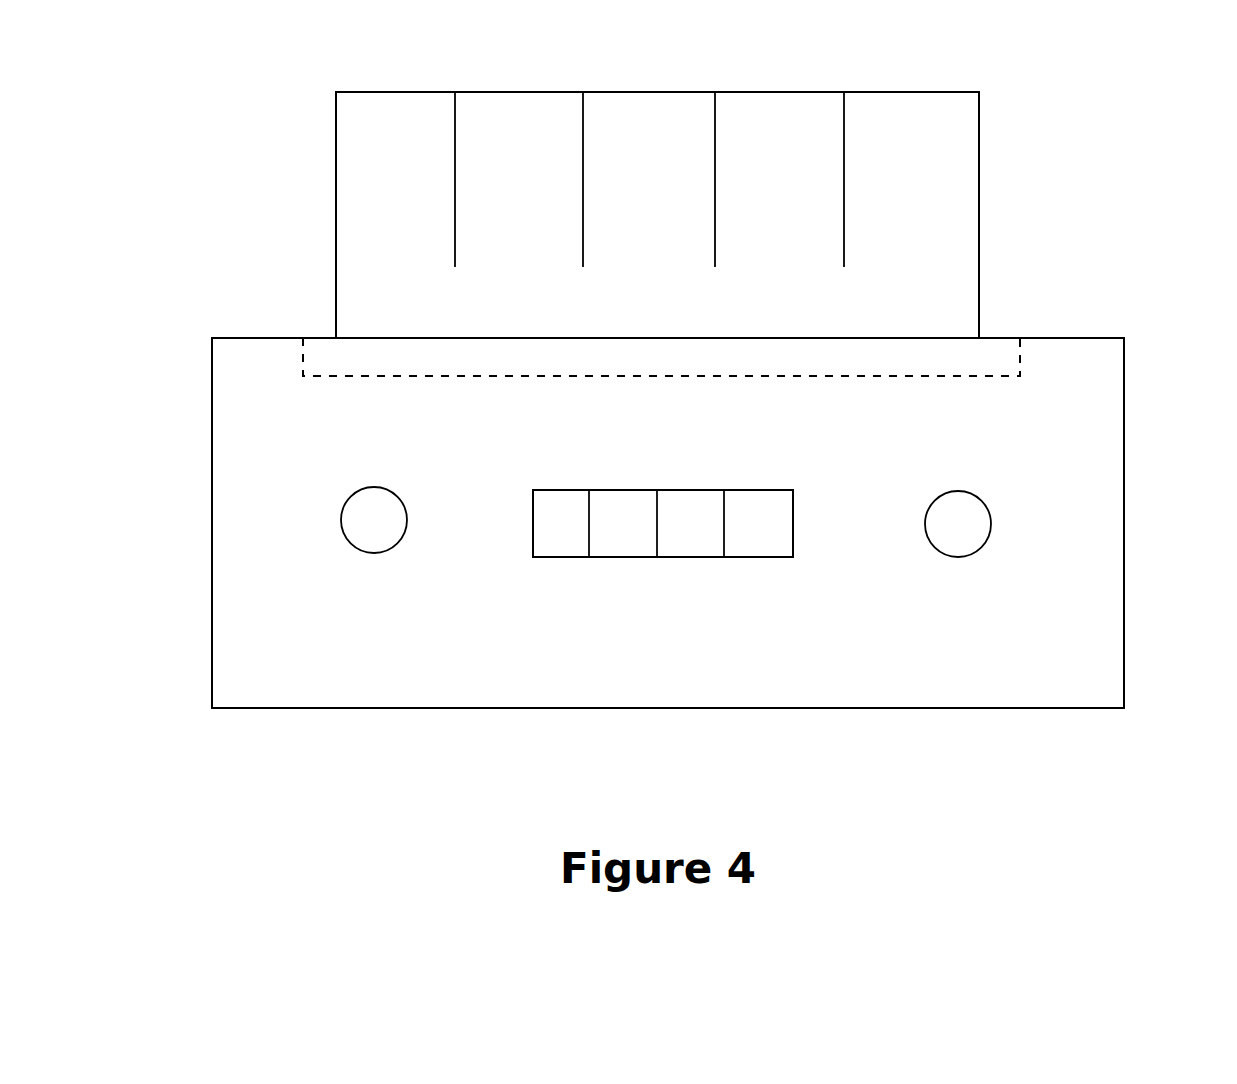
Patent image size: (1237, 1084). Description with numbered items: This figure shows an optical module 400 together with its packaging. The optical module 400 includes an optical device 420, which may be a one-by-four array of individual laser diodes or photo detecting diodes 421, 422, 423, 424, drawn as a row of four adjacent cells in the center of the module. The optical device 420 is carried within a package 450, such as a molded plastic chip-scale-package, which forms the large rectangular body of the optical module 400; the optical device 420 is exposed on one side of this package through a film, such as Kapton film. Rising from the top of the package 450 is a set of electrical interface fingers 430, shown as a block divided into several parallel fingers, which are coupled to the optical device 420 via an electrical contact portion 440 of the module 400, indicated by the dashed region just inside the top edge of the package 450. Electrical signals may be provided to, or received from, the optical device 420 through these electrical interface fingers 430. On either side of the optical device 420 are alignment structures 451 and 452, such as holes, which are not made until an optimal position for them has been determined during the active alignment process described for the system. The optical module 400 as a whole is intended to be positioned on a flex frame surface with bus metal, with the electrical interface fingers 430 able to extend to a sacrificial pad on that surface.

The optical module 400 is at (211, 446).
The optical device 420 is at (678, 602).
The individual laser diode or photo detecting diode 421 is at (584, 539).
The individual laser diode or photo detecting diode 422 is at (646, 539).
The individual laser diode or photo detecting diode 423 is at (712, 539).
The individual laser diode or photo detecting diode 424 is at (779, 539).
The electrical interface fingers 430 is at (392, 90).
The electrical contact portion 440 is at (1011, 380).
The package 450 is at (1125, 674).
The alignment structure 451 is at (341, 510).
The alignment structure 452 is at (992, 508).